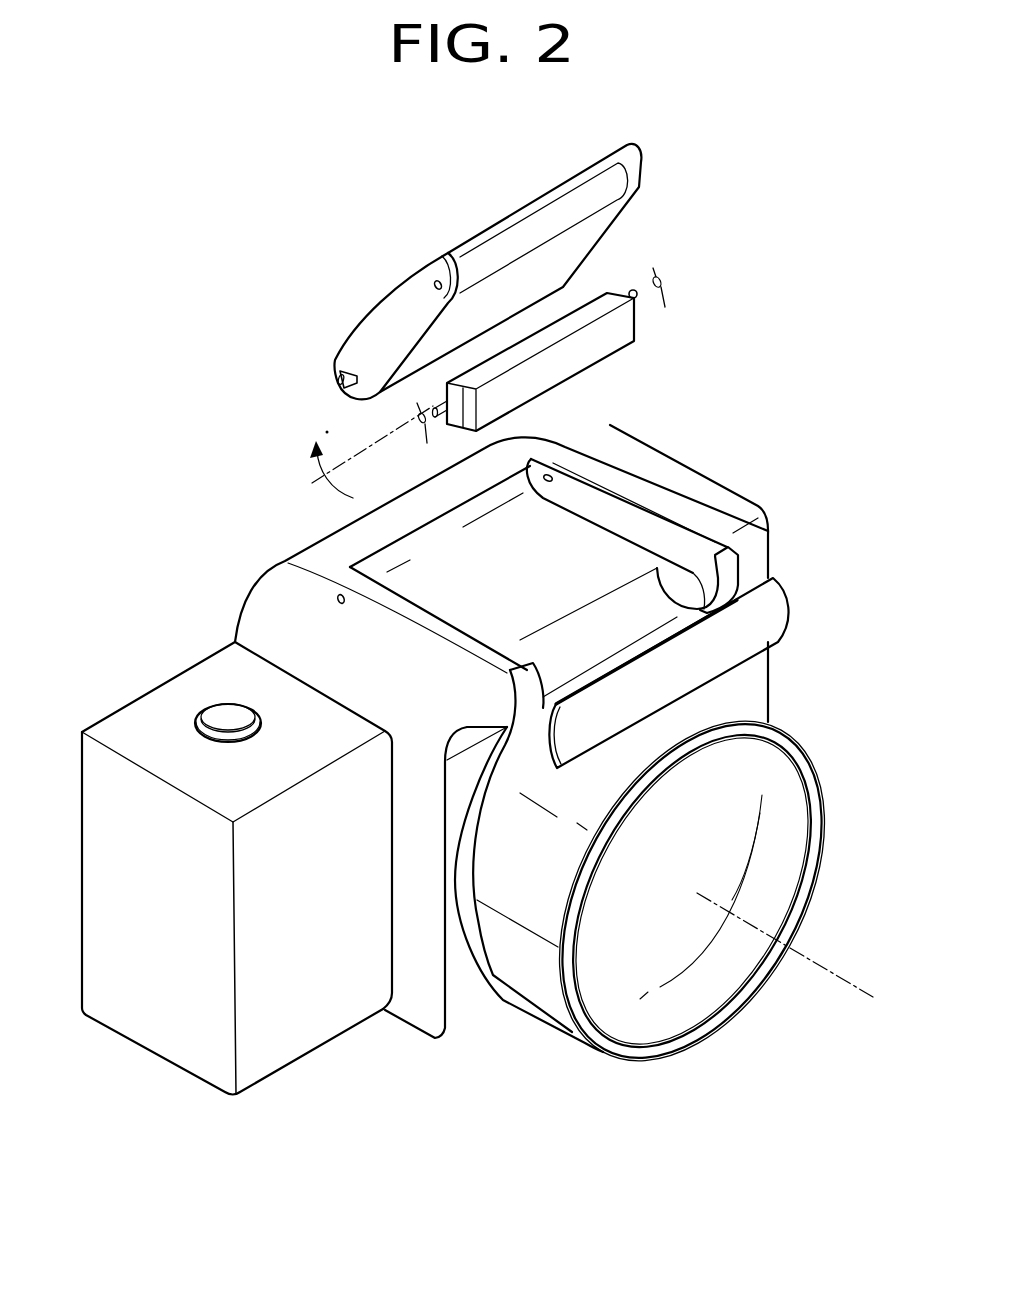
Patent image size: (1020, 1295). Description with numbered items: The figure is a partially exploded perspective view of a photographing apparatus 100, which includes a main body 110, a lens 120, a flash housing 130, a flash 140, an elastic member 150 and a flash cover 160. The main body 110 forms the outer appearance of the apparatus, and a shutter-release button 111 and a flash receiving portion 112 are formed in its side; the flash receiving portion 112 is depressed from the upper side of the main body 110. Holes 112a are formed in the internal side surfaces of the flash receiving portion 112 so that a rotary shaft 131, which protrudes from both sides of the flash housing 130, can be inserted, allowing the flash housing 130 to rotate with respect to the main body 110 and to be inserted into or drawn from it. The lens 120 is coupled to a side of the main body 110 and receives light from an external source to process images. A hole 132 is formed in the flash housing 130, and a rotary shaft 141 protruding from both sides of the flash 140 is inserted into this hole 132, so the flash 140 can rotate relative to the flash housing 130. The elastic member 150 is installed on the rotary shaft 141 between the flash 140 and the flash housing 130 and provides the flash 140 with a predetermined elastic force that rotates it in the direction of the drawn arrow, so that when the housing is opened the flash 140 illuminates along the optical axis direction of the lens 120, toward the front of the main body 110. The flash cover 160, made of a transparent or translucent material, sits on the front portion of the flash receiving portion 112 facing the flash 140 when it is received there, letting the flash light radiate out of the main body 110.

The photographing apparatus 100 is at (198, 547).
The main body 110 is at (157, 1035).
The shutter-release button 111 is at (222, 713).
The flash receiving portion 112 is at (608, 558).
The holes 112a is at (545, 472).
The lens 120 is at (705, 1005).
The flash housing 130 is at (387, 320).
The rotary shaft 131 is at (340, 375).
The hole 132 is at (437, 280).
The flash 140 is at (600, 347).
The rotary shaft 141 is at (637, 290).
The elastic member 150 is at (667, 293).
The flash cover 160 is at (717, 652).